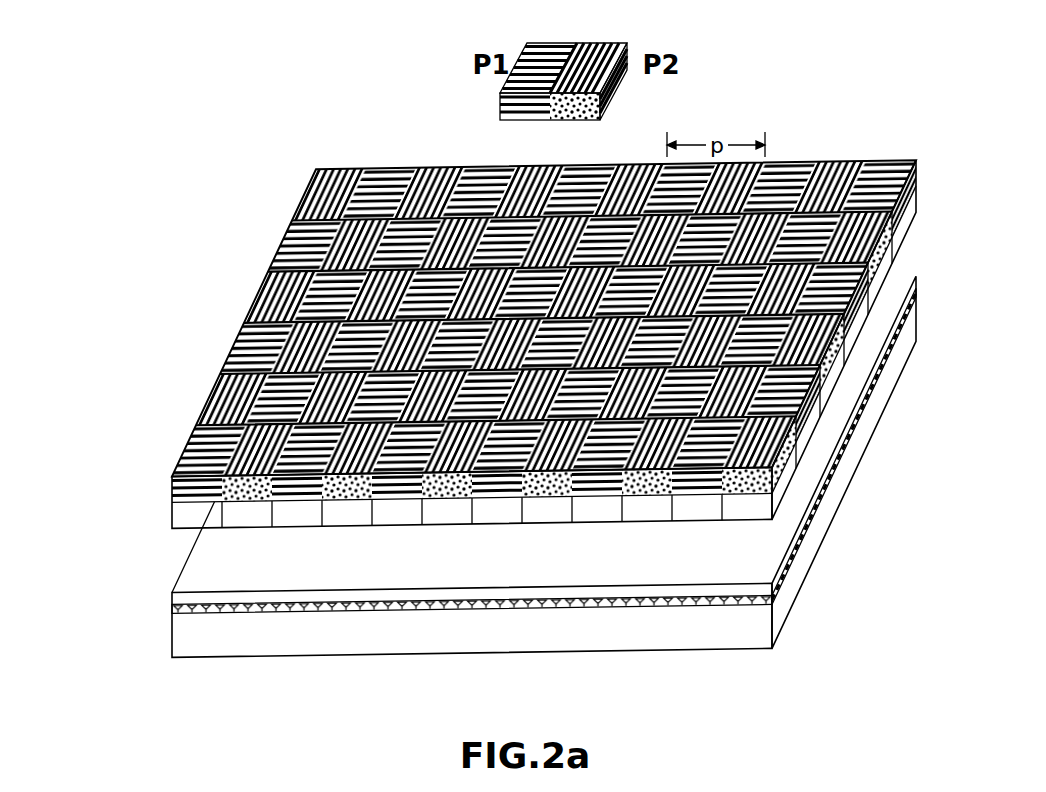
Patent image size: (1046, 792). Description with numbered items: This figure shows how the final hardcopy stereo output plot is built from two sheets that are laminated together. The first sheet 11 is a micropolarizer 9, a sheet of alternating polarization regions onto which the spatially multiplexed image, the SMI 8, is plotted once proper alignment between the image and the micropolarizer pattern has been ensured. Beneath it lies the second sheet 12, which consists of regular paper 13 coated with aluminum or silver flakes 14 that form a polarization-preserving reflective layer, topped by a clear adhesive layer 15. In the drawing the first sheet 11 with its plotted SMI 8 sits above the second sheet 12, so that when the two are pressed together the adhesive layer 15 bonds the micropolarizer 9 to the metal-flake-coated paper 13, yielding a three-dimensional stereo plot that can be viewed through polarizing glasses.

The SMI 8 is at (172, 522).
The micropolarizer (μPol) 9 is at (238, 330).
The first sheet 11 is at (930, 186).
The second sheet 12 is at (157, 622).
The regular paper 13 is at (278, 640).
The aluminum or silver flakes 14 is at (772, 592).
The clear adhesive layer 15 is at (257, 572).